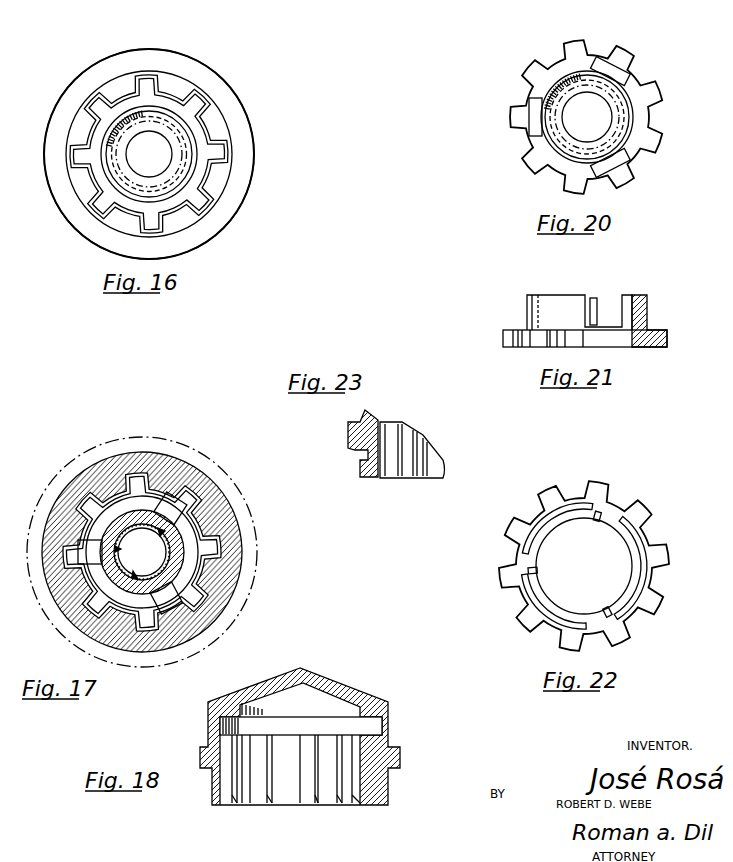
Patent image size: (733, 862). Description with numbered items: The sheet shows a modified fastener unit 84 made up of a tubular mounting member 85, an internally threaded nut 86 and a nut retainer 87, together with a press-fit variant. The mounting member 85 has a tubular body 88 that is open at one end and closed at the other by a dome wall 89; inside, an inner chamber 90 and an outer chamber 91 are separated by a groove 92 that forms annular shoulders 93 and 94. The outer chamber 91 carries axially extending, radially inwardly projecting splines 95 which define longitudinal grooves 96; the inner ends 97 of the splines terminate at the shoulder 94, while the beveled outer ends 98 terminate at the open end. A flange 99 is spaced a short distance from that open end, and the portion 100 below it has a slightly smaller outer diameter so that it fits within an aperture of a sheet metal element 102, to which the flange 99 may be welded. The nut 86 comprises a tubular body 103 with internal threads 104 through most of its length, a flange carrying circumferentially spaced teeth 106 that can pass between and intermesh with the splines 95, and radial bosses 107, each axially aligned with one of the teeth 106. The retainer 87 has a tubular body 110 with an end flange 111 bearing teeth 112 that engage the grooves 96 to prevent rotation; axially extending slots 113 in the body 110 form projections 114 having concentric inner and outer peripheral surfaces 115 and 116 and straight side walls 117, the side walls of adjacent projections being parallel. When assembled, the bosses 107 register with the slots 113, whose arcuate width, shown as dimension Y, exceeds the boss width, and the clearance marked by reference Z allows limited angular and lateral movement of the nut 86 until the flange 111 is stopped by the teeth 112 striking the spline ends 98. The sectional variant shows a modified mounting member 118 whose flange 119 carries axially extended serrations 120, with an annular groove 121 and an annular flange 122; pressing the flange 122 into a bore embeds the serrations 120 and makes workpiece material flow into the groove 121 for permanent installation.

In FIG. 16, the fastener unit 84 is at (170, 47).
In FIG. 16, the tubular mounting member 85 is at (203, 70).
In FIG. 17, the tubular mounting member 85 is at (171, 448).
In FIG. 18, the tubular mounting member 85 is at (385, 694).
In FIG. 20, the internally threaded nut 86 is at (663, 82).
In FIG. 17, the internally threaded nut 86 is at (142, 552).
In FIG. 16, the nut retainer 87 is at (142, 84).
In FIG. 21, the nut retainer 87 is at (649, 312).
In FIG. 22, the nut retainer 87 is at (670, 560).
In FIG. 17, the nut retainer 87 is at (207, 525).
In FIG. 18, the tubular body 88 is at (392, 720).
In FIG. 18, the dome wall 89 is at (262, 681).
In FIG. 18, the inner chamber 90 is at (305, 693).
In FIG. 18, the outer chamber 91 is at (228, 780).
In FIG. 18, the groove 92 is at (220, 727).
In FIG. 18, the annular shoulder 93 is at (242, 720).
In FIG. 18, the annular shoulder 94 is at (360, 725).
In FIG. 16, the splines 95 is at (117, 87).
In FIG. 17, the splines 95 is at (185, 498).
In FIG. 18, the splines 95 is at (237, 800).
In FIG. 18, the longitudinal grooves 96 is at (283, 800).
In FIG. 18, the inner ends of splines 97 is at (266, 742).
In FIG. 18, the outer ends of splines 98 is at (265, 800).
In FIG. 16, the flange 99 is at (85, 68).
In FIG. 18, the flange 99 is at (403, 750).
In FIG. 18, the body portion below flange 100 is at (388, 787).
In FIG. 17, the sheet metal element 102 is at (48, 612).
In FIG. 20, the tubular body of nut 103 is at (637, 117).
In FIG. 16, the internal threads 104 is at (170, 143).
In FIG. 20, the internal threads 104 is at (586, 116).
In FIG. 20, the teeth 106 is at (533, 68).
In FIG. 20, the radial bosses 107 is at (538, 138).
In FIG. 17, the radial bosses 107 is at (180, 510).
In FIG. 21, the tubular body of retainer 110 is at (527, 303).
In FIG. 22, the tubular body of retainer 110 is at (533, 603).
In FIG. 21, the end flange 111 is at (503, 340).
In FIG. 22, the end flange 111 is at (652, 617).
In FIG. 16, the teeth 112 is at (98, 110).
In FIG. 21, the teeth 112 is at (667, 333).
In FIG. 22, the teeth 112 is at (540, 507).
In FIG. 17, the teeth 112 is at (88, 500).
In FIG. 21, the axially extending slots 113 is at (612, 317).
In FIG. 22, the axially extending slots 113 is at (613, 513).
In FIG. 21, the axially extending projections 114 is at (588, 300).
In FIG. 22, the axially extending projections 114 is at (556, 519).
In FIG. 17, the axially extending projections 114 is at (229, 547).
In FIG. 22, the inner peripheral surface 115 is at (629, 553).
In FIG. 22, the outer peripheral surface 116 is at (647, 588).
In FIG. 21, the straight side walls 117 is at (597, 303).
In FIG. 22, the straight side walls 117 is at (597, 518).
In FIG. 17, the straight side walls 117 is at (140, 553).
In FIG. 23, the modified mounting member 118 is at (370, 412).
In FIG. 23, the flange 119 is at (348, 427).
In FIG. 23, the serrations 120 is at (350, 438).
In FIG. 23, the annular groove 121 is at (360, 455).
In FIG. 23, the annular flange 122 is at (362, 478).
In FIG. 17, the reference Z is at (185, 567).
In FIG. 17, the dimension Y is at (145, 588).